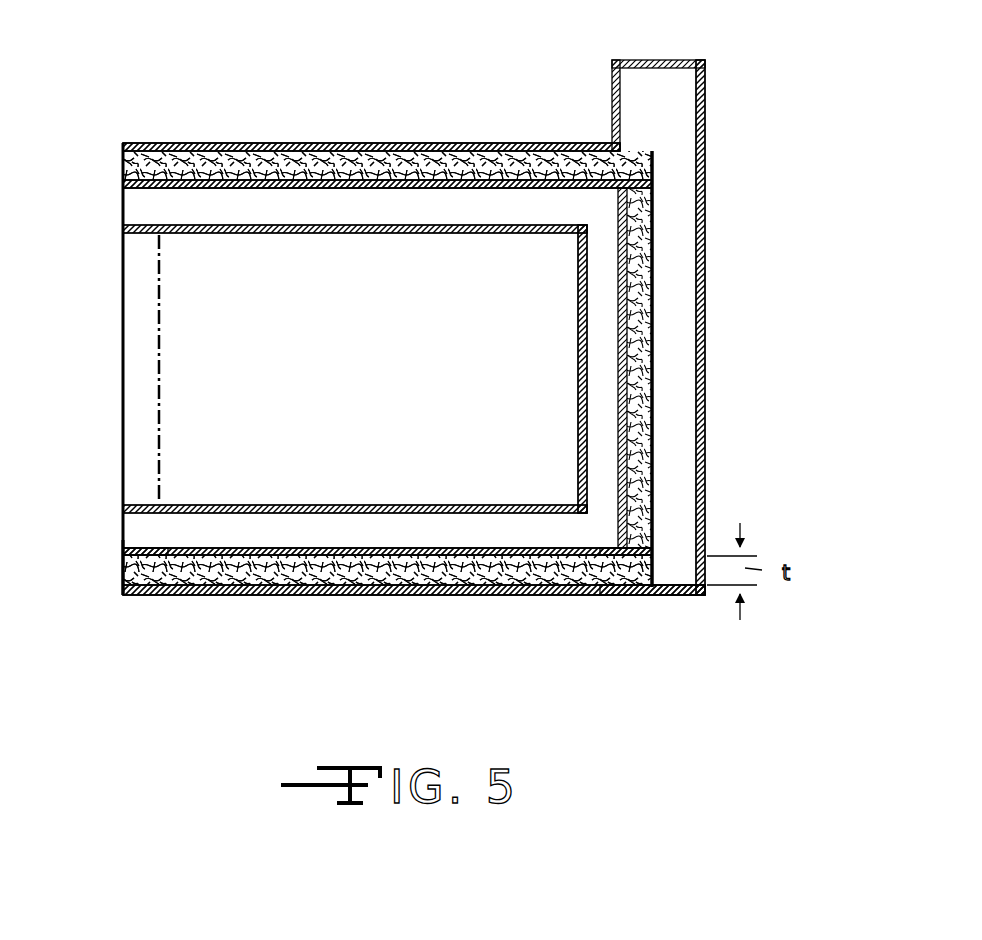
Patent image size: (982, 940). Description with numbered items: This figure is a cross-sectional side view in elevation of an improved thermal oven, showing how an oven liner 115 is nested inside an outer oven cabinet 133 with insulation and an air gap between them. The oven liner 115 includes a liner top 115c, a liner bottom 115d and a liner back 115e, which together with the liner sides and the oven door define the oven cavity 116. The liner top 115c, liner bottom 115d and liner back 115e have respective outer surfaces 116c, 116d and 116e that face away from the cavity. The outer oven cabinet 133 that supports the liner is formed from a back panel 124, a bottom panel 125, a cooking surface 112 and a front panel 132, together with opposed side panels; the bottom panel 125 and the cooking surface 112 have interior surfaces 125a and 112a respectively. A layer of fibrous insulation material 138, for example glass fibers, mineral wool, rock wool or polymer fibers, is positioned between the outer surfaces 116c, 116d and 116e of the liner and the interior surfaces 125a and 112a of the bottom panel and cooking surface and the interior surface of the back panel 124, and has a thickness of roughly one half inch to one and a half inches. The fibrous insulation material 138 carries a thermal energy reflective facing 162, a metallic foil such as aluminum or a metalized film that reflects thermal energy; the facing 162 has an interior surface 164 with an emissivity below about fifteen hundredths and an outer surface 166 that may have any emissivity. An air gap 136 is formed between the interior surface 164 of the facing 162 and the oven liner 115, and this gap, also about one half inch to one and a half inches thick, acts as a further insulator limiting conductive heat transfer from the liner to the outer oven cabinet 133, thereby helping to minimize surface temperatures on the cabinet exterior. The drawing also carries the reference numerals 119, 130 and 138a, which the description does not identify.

The cooking surface 112 is at (383, 111).
The interior surface of cooking surface 112a is at (149, 150).
The oven liner 115 is at (303, 369).
The liner top 115c is at (372, 233).
The liner bottom 115d is at (378, 506).
The liner back 115e is at (580, 346).
The oven cavity 116 is at (430, 387).
The outer surface of liner top 116c is at (421, 222).
The outer surface of liner bottom 116d is at (240, 515).
The outer surface of liner back 116e is at (587, 386).
The center line 119 is at (122, 422).
The back panel 124 is at (706, 297).
The bottom panel 125 is at (414, 627).
The interior surface of bottom panel 125a is at (470, 585).
The rear panel 130 is at (721, 305).
The front panel 132 is at (122, 482).
The outer oven cabinet 133 is at (712, 480).
The air gap 136 is at (505, 205).
The fibrous insulation material 138 is at (573, 150).
The inner sheet 138a is at (318, 190).
The thermal energy reflective facing 162 is at (245, 175).
The interior surface of facing 164 is at (160, 548).
The outer surface of facing 166 is at (608, 557).